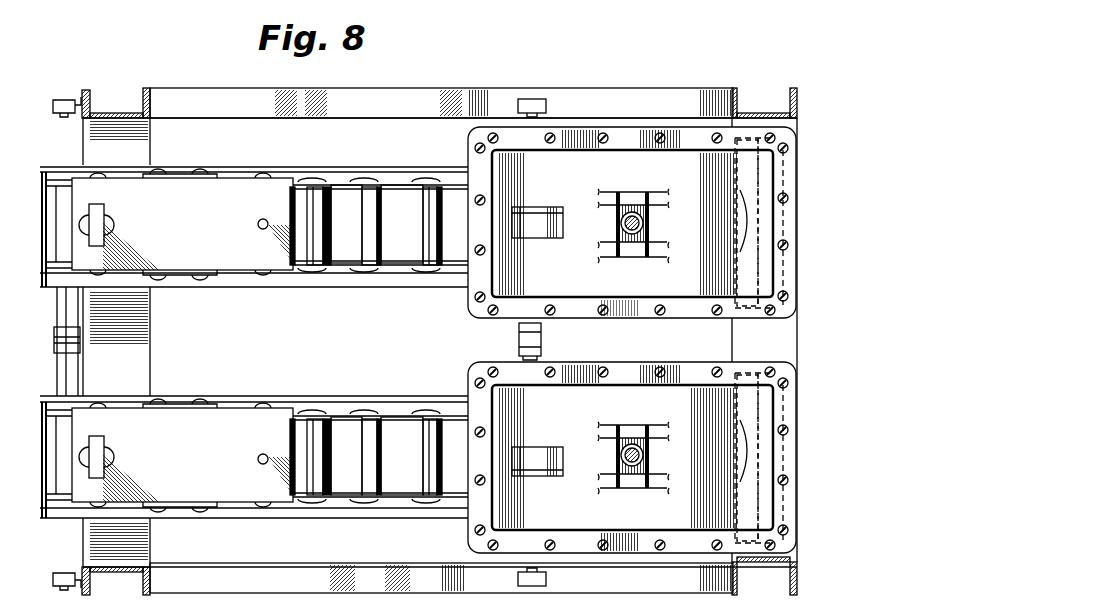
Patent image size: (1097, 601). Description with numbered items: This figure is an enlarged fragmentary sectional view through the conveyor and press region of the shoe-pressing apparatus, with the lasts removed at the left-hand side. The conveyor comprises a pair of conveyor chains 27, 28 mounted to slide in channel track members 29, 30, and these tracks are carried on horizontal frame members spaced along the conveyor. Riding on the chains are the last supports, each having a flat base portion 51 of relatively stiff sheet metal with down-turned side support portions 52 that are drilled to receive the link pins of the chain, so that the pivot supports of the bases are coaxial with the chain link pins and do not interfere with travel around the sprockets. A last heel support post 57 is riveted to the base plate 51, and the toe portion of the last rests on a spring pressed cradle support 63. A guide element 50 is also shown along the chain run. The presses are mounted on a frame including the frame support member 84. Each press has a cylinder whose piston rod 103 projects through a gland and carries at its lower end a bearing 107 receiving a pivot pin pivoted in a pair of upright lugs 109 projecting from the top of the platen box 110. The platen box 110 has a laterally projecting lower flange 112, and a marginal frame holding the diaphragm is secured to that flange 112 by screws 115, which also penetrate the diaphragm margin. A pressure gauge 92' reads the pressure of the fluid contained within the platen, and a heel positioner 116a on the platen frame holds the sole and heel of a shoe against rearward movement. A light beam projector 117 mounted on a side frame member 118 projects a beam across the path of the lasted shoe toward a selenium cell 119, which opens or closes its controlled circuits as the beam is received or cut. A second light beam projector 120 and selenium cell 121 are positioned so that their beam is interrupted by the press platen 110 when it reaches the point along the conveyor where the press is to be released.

The conveyor chain 27 is at (404, 177).
The conveyor chain 28 is at (342, 410).
The channel track member 29 is at (347, 160).
The channel track member 30 is at (270, 518).
The guide rail 50 is at (238, 178).
The flat base portion 51 is at (285, 175).
The side support portion 52 is at (185, 160).
The last heel support post 57 is at (259, 222).
The spring pressed cradle support 63 is at (101, 206).
The frame support member 84 is at (142, 90).
The pressure gauge 92' is at (539, 339).
The piston rod 103 is at (643, 223).
The bearing 107 is at (618, 223).
The upright lugs 109 is at (658, 195).
The platen box 110 is at (461, 150).
The lower flange 112 is at (562, 126).
The screws 115 is at (660, 143).
The heel positioner 116a is at (738, 269).
The light beam projector 117 is at (532, 99).
The side frame member 118 is at (639, 90).
The selenium cell 119 is at (541, 338).
The second light beam projector 120 is at (63, 102).
The selenium cell 121 is at (62, 328).